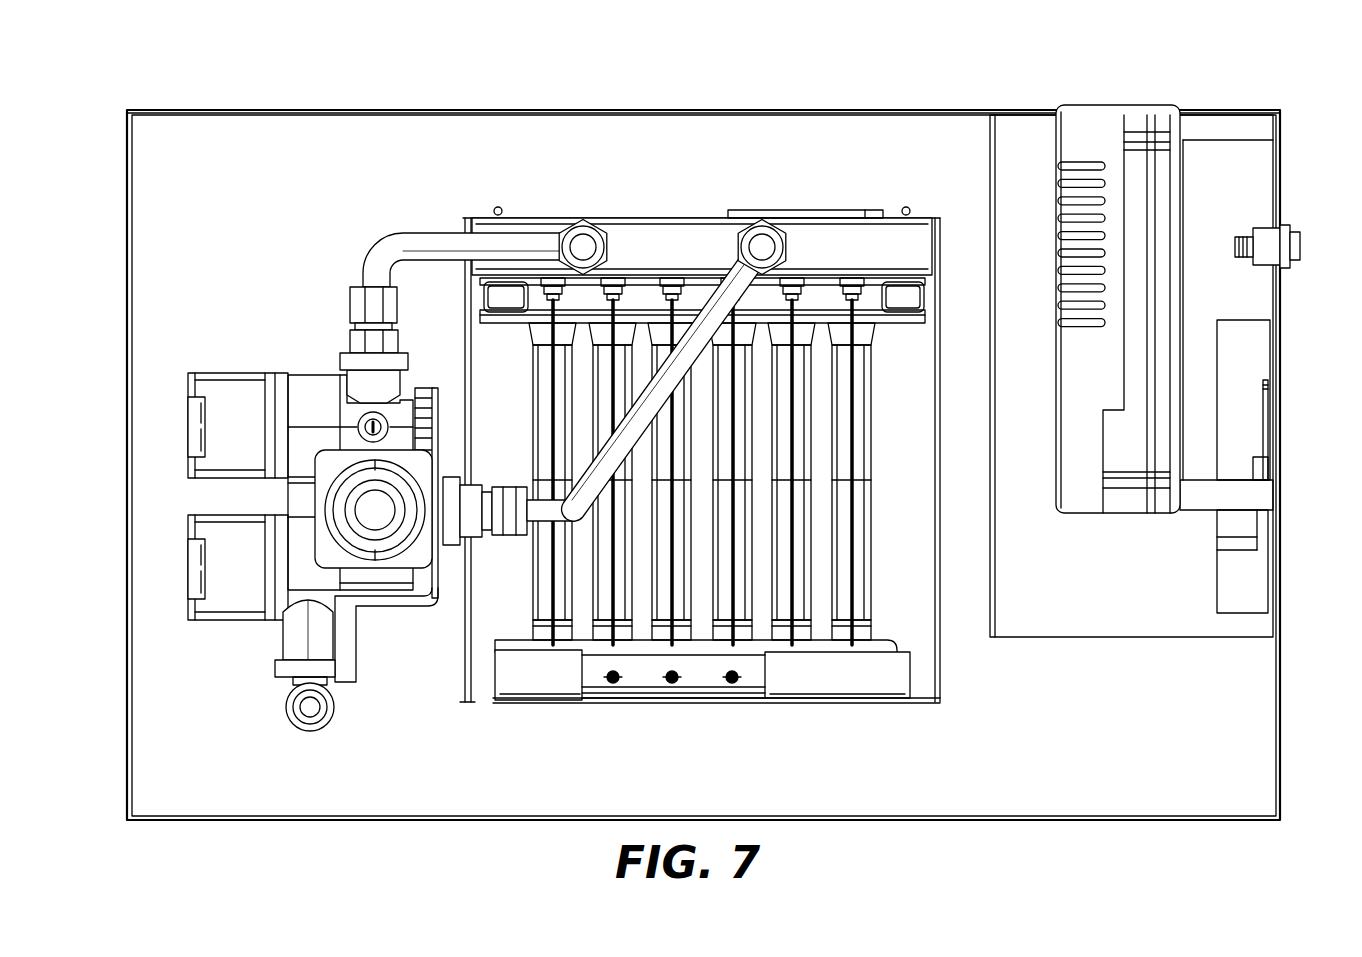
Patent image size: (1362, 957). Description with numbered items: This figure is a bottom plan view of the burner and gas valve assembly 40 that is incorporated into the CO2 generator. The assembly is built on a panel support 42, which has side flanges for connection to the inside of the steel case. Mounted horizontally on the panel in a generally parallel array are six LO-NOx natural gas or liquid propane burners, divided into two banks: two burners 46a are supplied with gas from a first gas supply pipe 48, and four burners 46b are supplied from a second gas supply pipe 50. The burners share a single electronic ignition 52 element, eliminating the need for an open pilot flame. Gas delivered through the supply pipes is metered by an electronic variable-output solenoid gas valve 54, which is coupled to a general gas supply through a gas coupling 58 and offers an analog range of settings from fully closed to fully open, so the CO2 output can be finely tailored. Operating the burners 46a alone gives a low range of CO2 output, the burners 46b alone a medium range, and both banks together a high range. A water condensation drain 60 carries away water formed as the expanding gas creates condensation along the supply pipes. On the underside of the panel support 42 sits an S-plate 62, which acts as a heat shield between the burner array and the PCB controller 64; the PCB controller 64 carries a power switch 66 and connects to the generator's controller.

The burner and gas valve assembly 40 is at (1278, 92).
The panel support 42 is at (913, 110).
The burners 46a is at (605, 632).
The burners 46b is at (677, 630).
The first gas supply pipe 48 is at (420, 242).
The second gas supply pipe 50 is at (712, 297).
The electronic ignition element 52 is at (830, 238).
The first electronic variable-output solenoid gas valve 54 is at (217, 598).
The gas coupling 58 is at (312, 723).
The water condensation drain 60 is at (380, 557).
The S-plate 62 is at (995, 132).
The PCB controller 64 is at (1098, 125).
The power switch 66 is at (1298, 230).